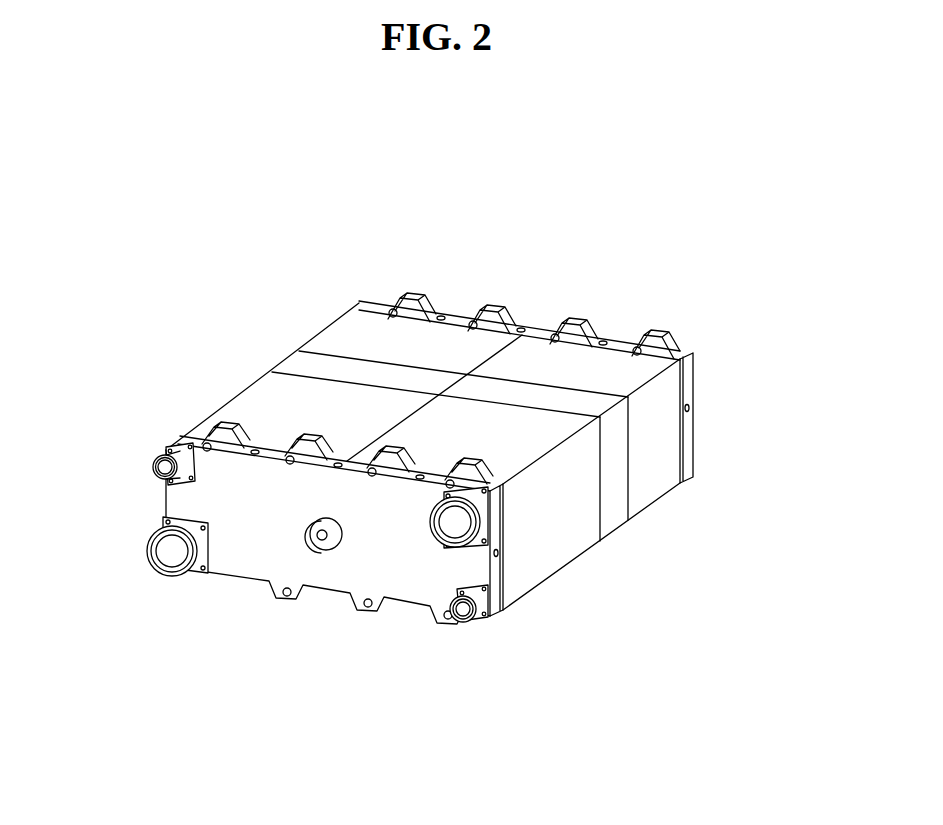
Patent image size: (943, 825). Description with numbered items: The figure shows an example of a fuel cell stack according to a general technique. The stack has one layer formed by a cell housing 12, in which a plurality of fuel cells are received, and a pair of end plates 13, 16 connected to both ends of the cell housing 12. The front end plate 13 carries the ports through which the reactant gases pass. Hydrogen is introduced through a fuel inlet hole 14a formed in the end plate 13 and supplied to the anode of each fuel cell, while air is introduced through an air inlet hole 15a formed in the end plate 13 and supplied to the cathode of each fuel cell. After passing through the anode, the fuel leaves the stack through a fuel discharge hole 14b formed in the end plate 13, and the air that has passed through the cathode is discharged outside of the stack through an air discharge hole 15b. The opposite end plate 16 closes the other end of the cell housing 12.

The cell housing 12 is at (423, 418).
The end plate 13 is at (334, 579).
The fuel inlet hole 14a is at (493, 643).
The fuel discharge hole 14b is at (139, 423).
The air inlet hole 15a is at (542, 548).
The air discharge hole 15b is at (176, 584).
The end plate 16 is at (720, 381).